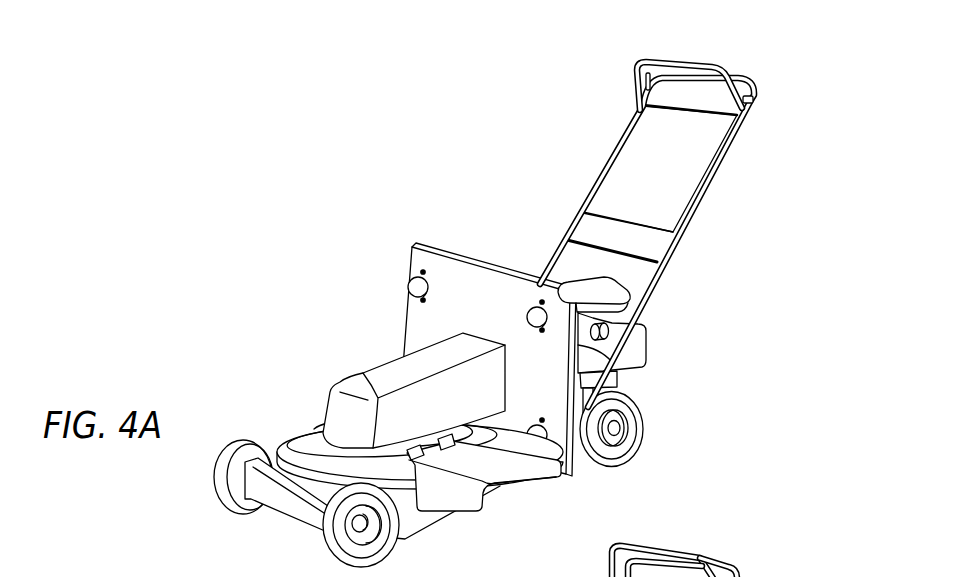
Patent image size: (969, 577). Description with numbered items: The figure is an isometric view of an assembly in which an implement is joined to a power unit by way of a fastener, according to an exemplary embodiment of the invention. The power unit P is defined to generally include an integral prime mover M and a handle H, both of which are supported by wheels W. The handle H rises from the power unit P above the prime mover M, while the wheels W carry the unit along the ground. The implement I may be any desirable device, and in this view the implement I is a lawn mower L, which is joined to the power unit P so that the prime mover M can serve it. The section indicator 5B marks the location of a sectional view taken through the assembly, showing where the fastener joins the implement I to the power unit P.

The handle H is at (727, 153).
The power unit P is at (724, 241).
The prime mover M is at (641, 340).
The wheels W is at (638, 433).
The lawn mower L is at (302, 432).
The implement I is at (352, 351).
The section line 5B is at (95, 277).